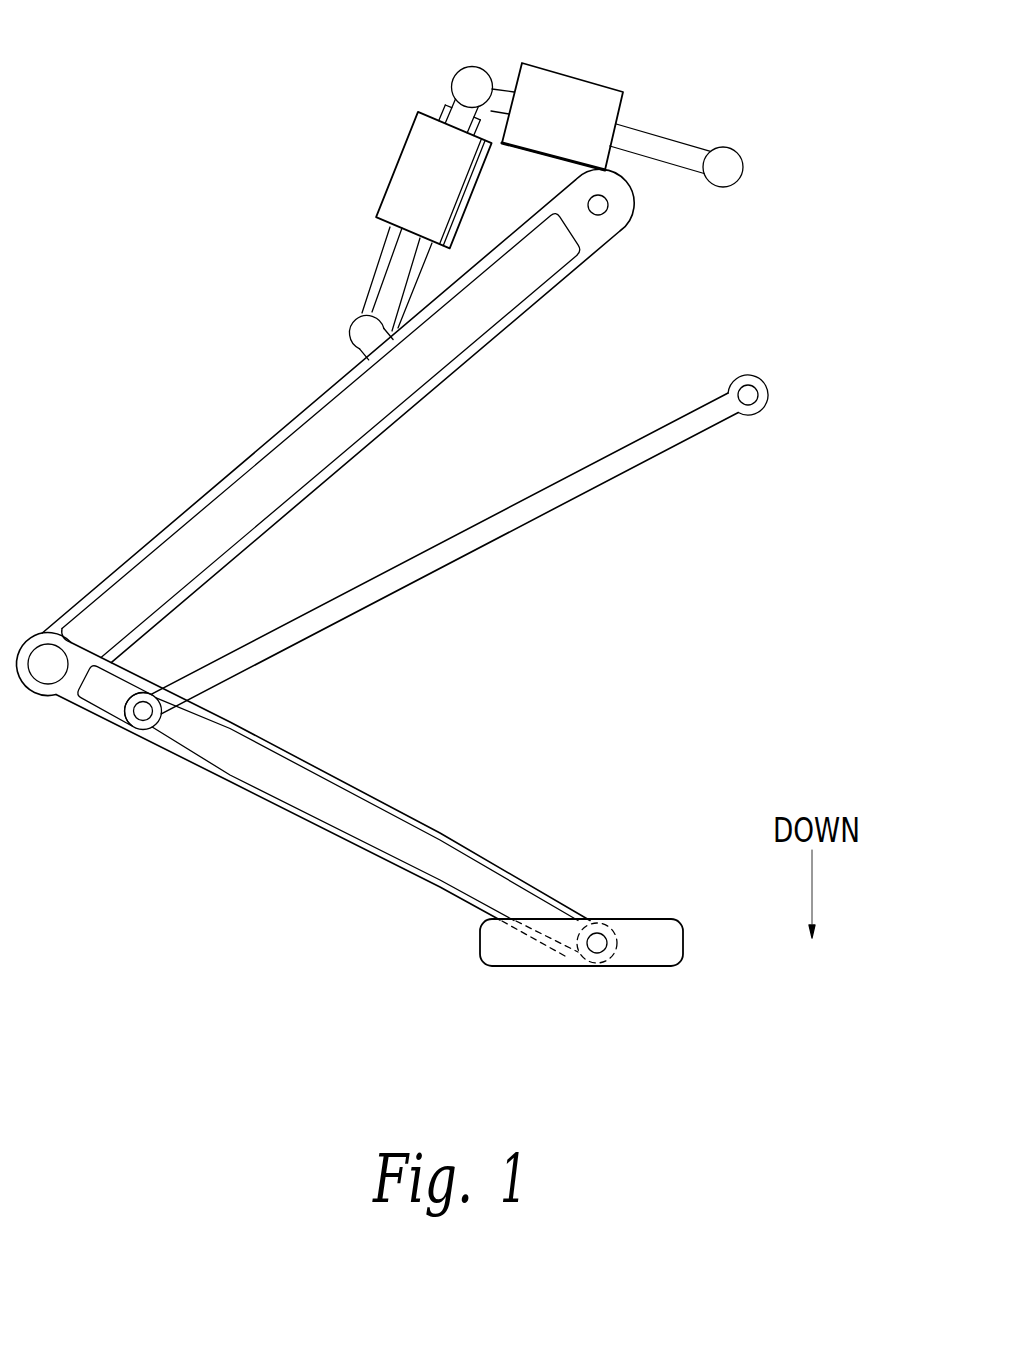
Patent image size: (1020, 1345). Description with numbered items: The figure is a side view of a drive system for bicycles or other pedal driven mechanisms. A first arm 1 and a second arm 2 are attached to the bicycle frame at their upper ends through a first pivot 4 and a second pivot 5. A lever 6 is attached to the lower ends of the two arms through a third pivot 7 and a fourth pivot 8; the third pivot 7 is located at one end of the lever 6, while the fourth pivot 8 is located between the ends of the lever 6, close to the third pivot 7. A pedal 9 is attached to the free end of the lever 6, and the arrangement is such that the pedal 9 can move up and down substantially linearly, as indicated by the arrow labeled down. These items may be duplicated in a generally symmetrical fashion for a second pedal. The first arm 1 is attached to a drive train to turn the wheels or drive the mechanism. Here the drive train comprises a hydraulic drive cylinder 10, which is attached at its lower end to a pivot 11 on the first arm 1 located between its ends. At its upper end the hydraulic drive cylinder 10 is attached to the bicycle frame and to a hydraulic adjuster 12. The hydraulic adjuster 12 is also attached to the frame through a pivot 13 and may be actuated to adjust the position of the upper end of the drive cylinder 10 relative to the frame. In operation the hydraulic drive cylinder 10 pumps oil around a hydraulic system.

The first arm 1 is at (247, 490).
The second arm 2 is at (520, 500).
The first pivot 4 is at (603, 211).
The second pivot 5 is at (752, 402).
The lever 6 is at (333, 790).
The third pivot 7 is at (50, 650).
The fourth pivot 8 is at (140, 720).
The pedal 9 is at (648, 930).
The hydraulic drive cylinder 10 is at (405, 189).
The pivot 11 is at (370, 333).
The hydraulic adjuster 12 is at (583, 95).
The pivot 13 is at (722, 158).